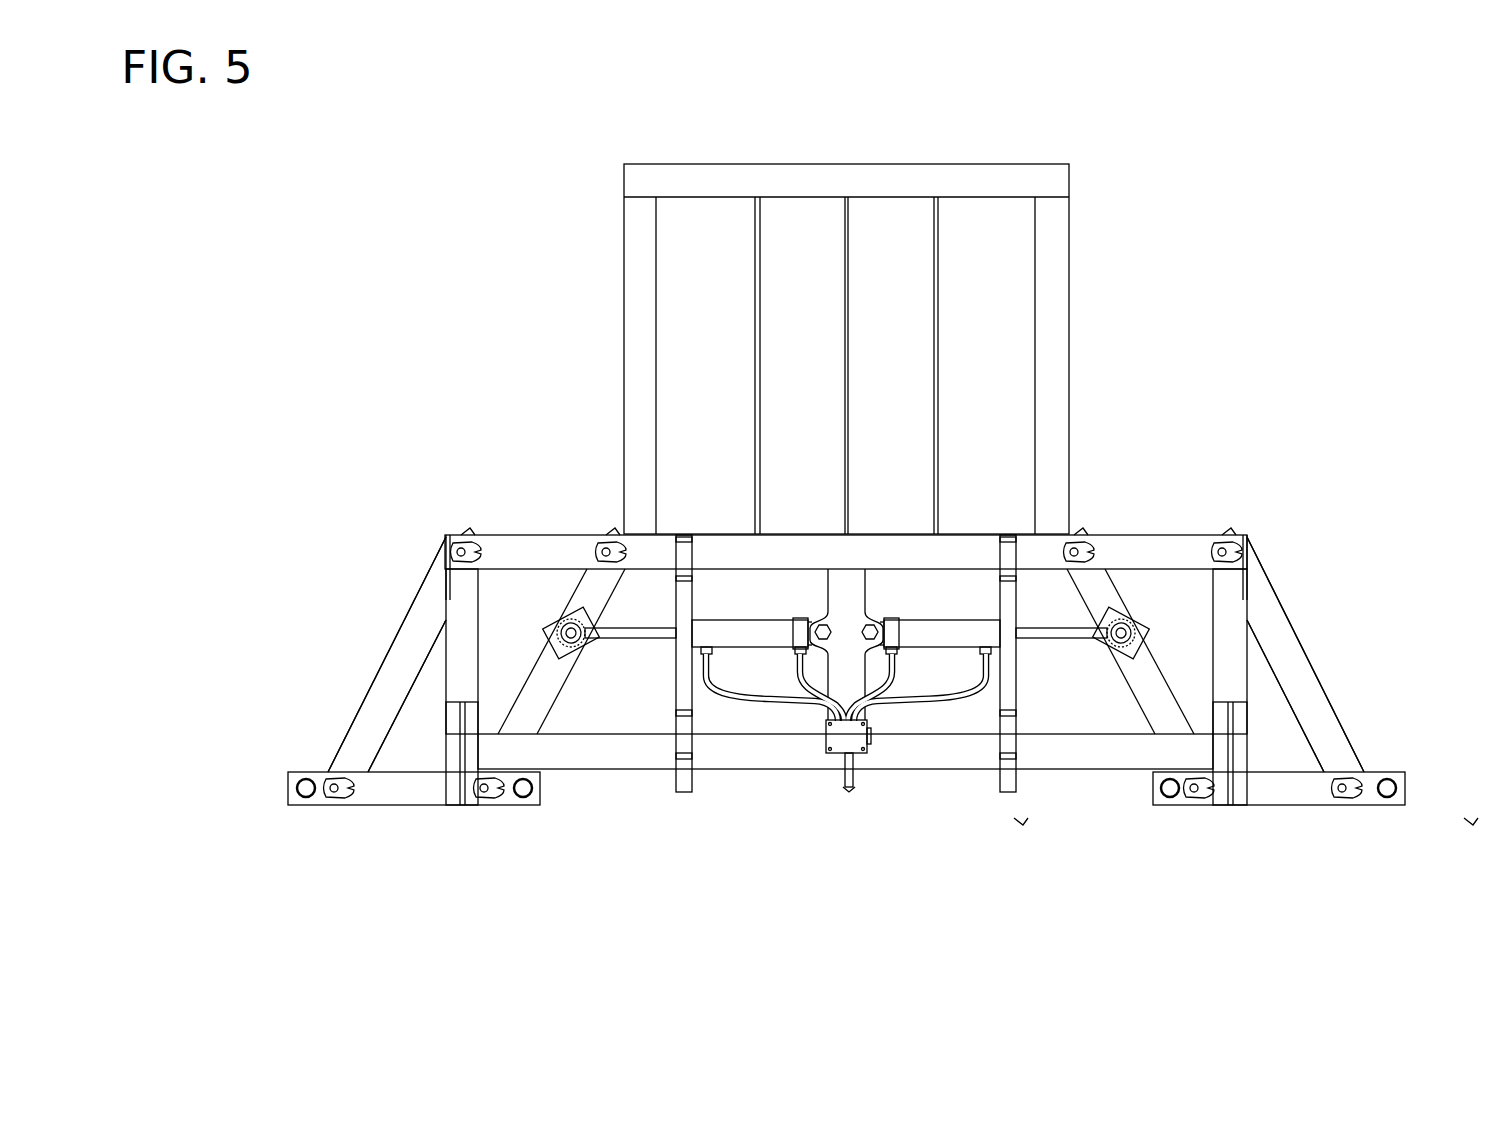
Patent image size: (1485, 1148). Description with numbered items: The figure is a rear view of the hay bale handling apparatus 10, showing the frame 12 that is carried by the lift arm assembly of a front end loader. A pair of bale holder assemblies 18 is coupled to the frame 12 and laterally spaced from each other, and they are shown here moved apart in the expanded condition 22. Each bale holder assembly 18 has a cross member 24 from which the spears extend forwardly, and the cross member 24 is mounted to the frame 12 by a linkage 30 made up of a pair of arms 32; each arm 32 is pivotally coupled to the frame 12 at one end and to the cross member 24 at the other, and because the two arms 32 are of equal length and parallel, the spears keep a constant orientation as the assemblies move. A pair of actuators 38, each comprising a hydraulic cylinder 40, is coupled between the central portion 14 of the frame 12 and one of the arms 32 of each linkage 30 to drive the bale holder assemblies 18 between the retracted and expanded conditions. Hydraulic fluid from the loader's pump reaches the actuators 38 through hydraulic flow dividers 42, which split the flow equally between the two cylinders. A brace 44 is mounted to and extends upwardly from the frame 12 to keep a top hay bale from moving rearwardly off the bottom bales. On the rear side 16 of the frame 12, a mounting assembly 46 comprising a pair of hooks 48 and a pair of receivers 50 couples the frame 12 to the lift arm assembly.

The hay bale handling apparatus 10 is at (1165, 108).
The frame 12 is at (960, 797).
The central portion 14 is at (845, 587).
The rear side 16 is at (733, 552).
The bale holder assembly 18 is at (337, 711).
The expanded condition 22 is at (1326, 824).
The cross member 24 is at (400, 790).
The linkage 30 is at (320, 737).
The arm 32 is at (383, 698).
The actuator 38 is at (769, 608).
The hydraulic cylinder 40 is at (717, 635).
The hydraulic flow divider 42 is at (842, 736).
The brace 44 is at (898, 173).
The mounting assembly 46 is at (1048, 606).
The hook 48 is at (683, 557).
The receiver 50 is at (685, 768).